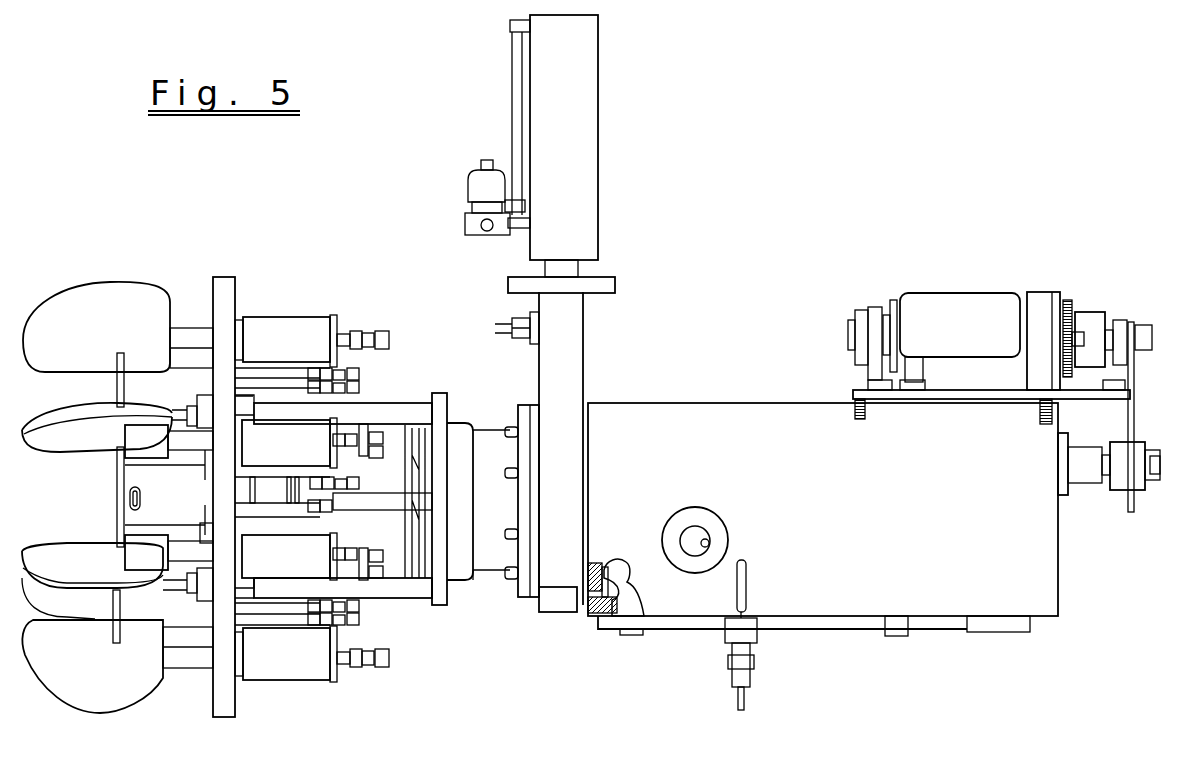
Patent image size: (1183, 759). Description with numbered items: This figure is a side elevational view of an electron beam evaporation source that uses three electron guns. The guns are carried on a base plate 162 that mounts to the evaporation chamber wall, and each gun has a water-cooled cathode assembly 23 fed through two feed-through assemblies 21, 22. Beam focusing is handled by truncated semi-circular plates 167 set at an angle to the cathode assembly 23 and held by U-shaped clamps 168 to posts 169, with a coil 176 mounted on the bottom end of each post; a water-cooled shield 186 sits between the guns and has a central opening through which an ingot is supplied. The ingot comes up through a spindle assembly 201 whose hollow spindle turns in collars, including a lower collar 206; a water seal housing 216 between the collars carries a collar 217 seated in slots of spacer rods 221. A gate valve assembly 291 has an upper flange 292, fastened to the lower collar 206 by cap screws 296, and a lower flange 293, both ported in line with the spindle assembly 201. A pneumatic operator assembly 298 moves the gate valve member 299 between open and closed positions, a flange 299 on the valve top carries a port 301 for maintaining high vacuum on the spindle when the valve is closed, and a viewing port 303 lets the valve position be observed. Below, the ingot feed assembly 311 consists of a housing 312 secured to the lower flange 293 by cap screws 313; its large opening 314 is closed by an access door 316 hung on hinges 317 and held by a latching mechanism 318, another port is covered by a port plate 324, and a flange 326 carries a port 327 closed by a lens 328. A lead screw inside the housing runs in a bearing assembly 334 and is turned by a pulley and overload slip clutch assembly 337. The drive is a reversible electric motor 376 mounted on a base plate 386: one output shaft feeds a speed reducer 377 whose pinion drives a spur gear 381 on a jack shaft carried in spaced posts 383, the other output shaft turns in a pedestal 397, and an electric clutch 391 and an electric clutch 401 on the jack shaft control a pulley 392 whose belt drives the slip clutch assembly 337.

The plates 167 is at (108, 329).
The U-shaped clamps 168 is at (146, 497).
The posts 169 is at (193, 333).
The water-cooled shield 186 is at (117, 467).
The cathode assembly 23 is at (112, 511).
The base plate 162 is at (237, 293).
The coil 176 is at (313, 323).
The feed-through assembly 22 is at (256, 472).
The feed-through assembly 21 is at (258, 524).
The spacer rods 221 is at (408, 413).
The water seal housing 216 is at (375, 477).
The collar 217 is at (410, 476).
The spindle assembly 201 is at (468, 412).
The cap screws 296 is at (512, 573).
The lower collar 206 is at (490, 573).
The upper flange 292 is at (530, 595).
The lower flange 293 is at (583, 597).
The viewing port 303 is at (557, 610).
The pneumatic operator assembly 298 is at (602, 79).
The gate valve assembly 291 is at (634, 226).
The gate valve member / flange 299 is at (535, 312).
The port 301 is at (519, 340).
The housing 312 is at (858, 518).
The ingot feed assembly 311 is at (774, 390).
The access door 316 is at (813, 629).
The hinges 317 is at (897, 636).
The port plate 324 is at (1003, 632).
The latching mechanism 318 is at (730, 677).
The cap screws 313 is at (622, 567).
The large opening 314 is at (628, 585).
The flange 326 is at (673, 520).
The lens 328 is at (696, 532).
The port 327 is at (709, 545).
The bearing assembly 334 is at (1085, 483).
The pulley and overload slip clutch assembly 337 is at (1117, 490).
The pulley 392 is at (1142, 330).
The base plate 386 is at (1000, 390).
The reversible electric motor 376 is at (973, 338).
The pedestal 397 is at (877, 307).
The electric clutch 401 is at (861, 312).
The speed reducer 377 is at (1042, 297).
The spur gear 381 is at (1068, 300).
The electric clutch 391 is at (1090, 312).
The posts 383 is at (1122, 320).